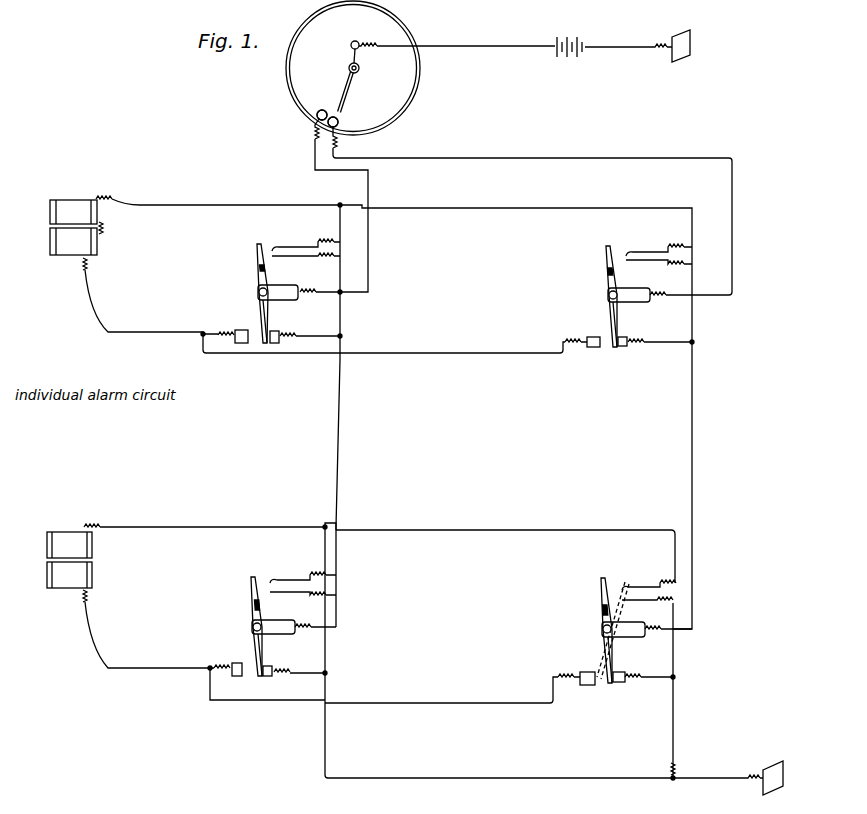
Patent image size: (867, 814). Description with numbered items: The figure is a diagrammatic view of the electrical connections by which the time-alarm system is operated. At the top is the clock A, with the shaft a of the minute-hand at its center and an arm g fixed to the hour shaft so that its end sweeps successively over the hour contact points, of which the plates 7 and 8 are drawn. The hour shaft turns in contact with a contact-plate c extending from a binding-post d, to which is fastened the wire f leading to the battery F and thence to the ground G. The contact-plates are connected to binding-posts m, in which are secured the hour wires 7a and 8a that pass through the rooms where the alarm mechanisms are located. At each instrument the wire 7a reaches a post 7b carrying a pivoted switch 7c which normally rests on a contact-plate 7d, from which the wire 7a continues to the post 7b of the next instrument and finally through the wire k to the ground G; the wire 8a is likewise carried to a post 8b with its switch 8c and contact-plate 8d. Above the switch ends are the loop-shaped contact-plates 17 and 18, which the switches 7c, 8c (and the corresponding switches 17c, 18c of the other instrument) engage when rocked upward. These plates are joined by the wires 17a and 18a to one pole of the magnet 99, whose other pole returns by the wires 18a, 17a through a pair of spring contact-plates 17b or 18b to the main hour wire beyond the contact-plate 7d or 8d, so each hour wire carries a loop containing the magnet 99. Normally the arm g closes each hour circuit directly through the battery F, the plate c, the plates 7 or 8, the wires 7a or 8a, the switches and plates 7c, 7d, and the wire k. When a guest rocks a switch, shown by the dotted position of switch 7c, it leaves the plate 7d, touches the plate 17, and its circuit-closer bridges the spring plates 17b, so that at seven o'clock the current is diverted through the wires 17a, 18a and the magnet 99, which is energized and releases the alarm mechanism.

The clock A is at (353, 68).
The shaft of the minute-hand a is at (358, 68).
The contact-plate c is at (352, 56).
The binding-post d is at (359, 37).
The arm g is at (350, 99).
The binding-posts m is at (327, 116).
The contact-plate 7 is at (339, 112).
The contact-plate 8 is at (324, 109).
The wire f is at (509, 46).
The battery F is at (569, 54).
The ground G is at (684, 412).
The wire k is at (714, 769).
The wire 7a is at (416, 158).
The wires 17a is at (541, 208).
The wire 8a is at (369, 186).
The wires 18a is at (255, 205).
The magnet 99 is at (72, 394).
The contact-plate 18 is at (237, 663).
The contact-plate 17 is at (593, 347).
The switch 18c is at (258, 248).
The switch 17c is at (607, 252).
The switch 8c is at (268, 322).
The switch 7c is at (618, 324).
The post 8b is at (284, 460).
The post 7b is at (647, 456).
The spring contact-plates 18b is at (305, 419).
The spring contact-plates 17b is at (657, 427).
The contact-plate 8d is at (281, 506).
The contact-plate 7d is at (622, 347).